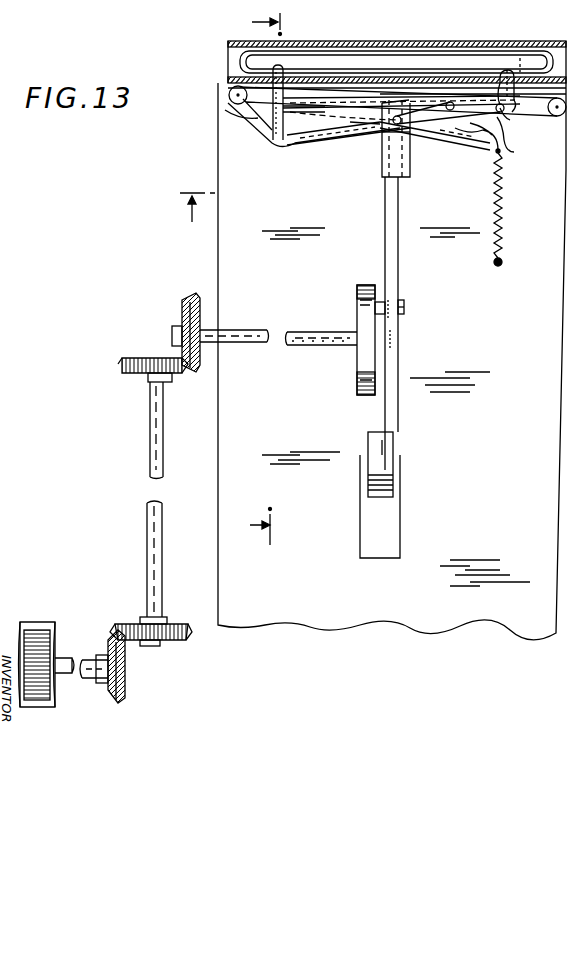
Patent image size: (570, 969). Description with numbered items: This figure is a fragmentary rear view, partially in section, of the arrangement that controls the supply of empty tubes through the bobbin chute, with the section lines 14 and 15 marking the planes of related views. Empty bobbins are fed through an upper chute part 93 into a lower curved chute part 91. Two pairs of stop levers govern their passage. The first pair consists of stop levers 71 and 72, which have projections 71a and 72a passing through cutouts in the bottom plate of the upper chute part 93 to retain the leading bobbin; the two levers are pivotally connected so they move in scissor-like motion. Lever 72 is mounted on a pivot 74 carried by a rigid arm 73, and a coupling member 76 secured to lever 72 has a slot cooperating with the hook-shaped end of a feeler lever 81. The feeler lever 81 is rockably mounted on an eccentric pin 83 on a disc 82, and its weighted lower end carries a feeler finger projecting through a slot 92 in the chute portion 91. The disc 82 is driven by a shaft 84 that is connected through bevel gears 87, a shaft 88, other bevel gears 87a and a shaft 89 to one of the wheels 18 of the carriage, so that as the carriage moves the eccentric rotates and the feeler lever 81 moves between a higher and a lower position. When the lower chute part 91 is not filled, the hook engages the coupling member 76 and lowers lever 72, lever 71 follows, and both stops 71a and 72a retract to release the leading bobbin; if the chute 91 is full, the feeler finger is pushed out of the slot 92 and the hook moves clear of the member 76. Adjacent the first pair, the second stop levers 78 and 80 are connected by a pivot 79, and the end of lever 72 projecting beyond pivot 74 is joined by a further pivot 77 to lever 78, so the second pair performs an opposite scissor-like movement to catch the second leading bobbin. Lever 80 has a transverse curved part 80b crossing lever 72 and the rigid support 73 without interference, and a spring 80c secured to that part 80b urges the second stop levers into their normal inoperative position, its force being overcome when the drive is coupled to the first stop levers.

The section line 14 is at (253, 278).
The section line 15 is at (196, 220).
The carriage wheel 18 is at (36, 630).
The first stop lever 71 is at (430, 90).
The stop projection 71a is at (523, 62).
The first stop lever 72 is at (310, 95).
The stop projection 72a is at (280, 66).
The rigid arm 73 is at (504, 70).
The pivot 74 is at (456, 135).
The coupling member 76 is at (408, 177).
The pivot 77 is at (523, 112).
The second stop lever 78 is at (326, 146).
The pivot 79 is at (376, 128).
The second stop lever 80 is at (232, 120).
The transverse curved part 80b is at (508, 150).
The spring 80c is at (503, 234).
The feeler lever 81 is at (399, 258).
The disc 82 is at (367, 285).
The eccentric pin 83 is at (406, 306).
The shaft 84 is at (309, 332).
The bevel gears 87 is at (184, 330).
The bevel gears 87a is at (136, 648).
The shaft 88 is at (161, 540).
The shaft 89 is at (92, 682).
The lower curved chute part 91 is at (436, 628).
The slot 92 is at (398, 528).
The upper chute part 93 is at (228, 90).